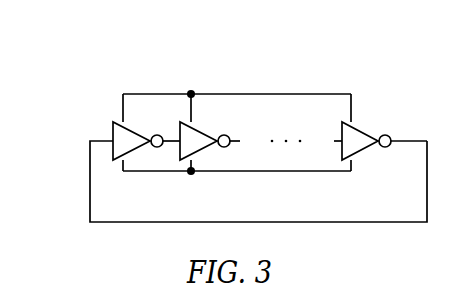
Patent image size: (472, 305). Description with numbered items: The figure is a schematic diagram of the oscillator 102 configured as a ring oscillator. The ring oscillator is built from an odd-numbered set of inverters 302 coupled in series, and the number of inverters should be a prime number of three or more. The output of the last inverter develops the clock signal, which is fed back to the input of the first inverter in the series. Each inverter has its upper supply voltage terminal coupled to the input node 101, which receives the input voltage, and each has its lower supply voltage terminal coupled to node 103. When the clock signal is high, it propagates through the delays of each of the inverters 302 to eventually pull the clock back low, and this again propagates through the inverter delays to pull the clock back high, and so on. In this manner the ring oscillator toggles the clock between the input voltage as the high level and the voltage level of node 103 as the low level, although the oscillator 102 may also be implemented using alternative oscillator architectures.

The oscillator 102 is at (246, 32).
The input node 101 is at (189, 92).
The node 103 is at (191, 176).
The inverters 302 is at (88, 105).